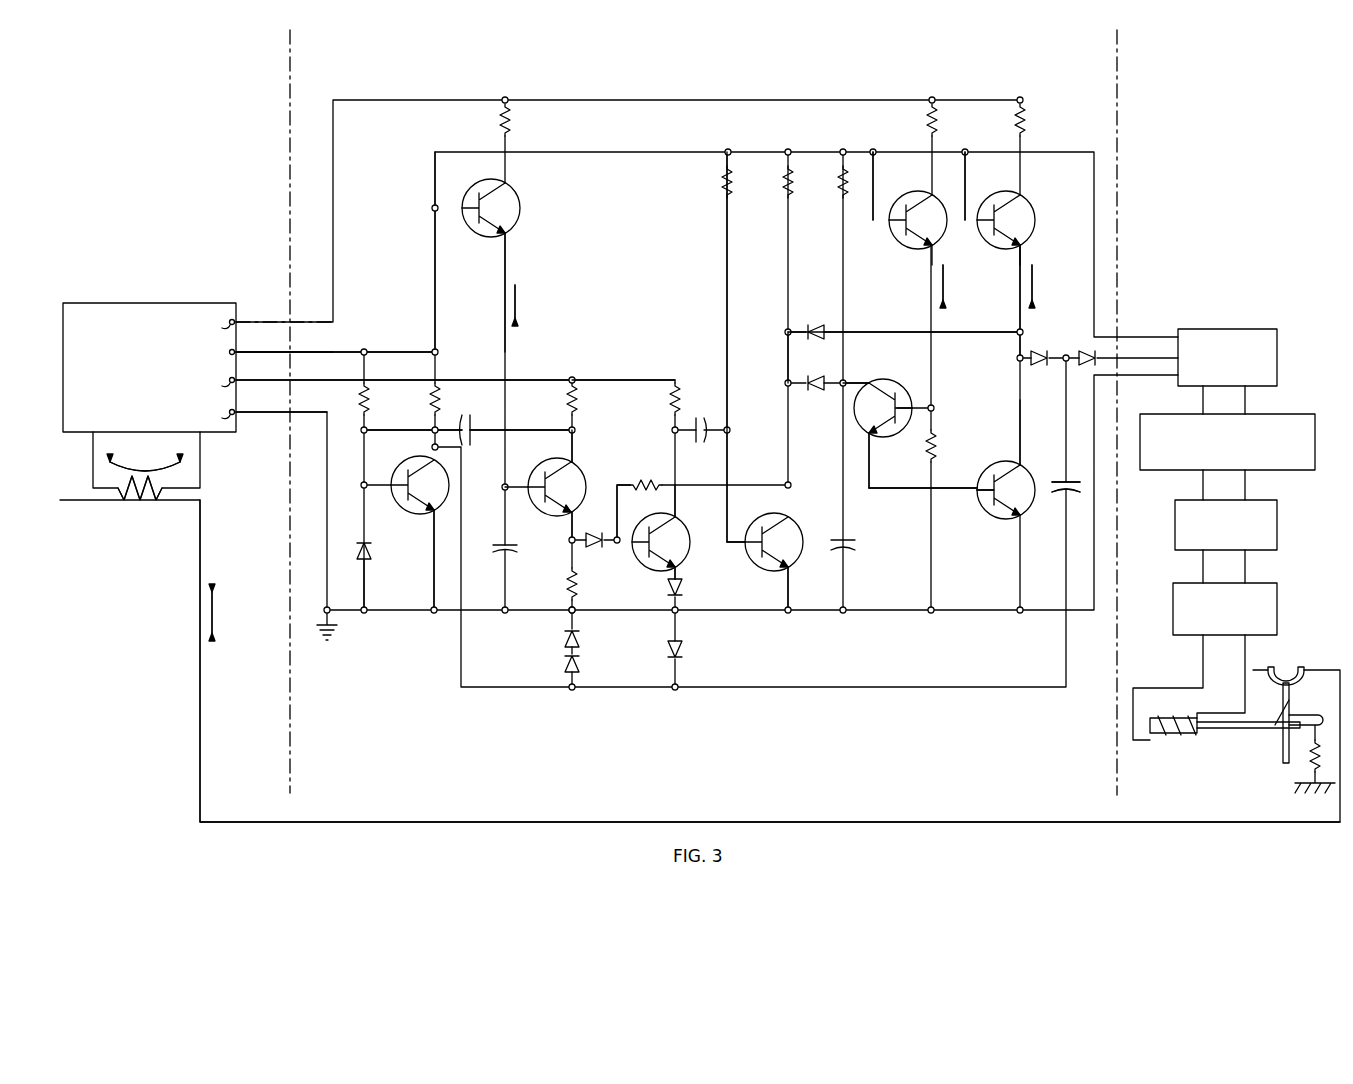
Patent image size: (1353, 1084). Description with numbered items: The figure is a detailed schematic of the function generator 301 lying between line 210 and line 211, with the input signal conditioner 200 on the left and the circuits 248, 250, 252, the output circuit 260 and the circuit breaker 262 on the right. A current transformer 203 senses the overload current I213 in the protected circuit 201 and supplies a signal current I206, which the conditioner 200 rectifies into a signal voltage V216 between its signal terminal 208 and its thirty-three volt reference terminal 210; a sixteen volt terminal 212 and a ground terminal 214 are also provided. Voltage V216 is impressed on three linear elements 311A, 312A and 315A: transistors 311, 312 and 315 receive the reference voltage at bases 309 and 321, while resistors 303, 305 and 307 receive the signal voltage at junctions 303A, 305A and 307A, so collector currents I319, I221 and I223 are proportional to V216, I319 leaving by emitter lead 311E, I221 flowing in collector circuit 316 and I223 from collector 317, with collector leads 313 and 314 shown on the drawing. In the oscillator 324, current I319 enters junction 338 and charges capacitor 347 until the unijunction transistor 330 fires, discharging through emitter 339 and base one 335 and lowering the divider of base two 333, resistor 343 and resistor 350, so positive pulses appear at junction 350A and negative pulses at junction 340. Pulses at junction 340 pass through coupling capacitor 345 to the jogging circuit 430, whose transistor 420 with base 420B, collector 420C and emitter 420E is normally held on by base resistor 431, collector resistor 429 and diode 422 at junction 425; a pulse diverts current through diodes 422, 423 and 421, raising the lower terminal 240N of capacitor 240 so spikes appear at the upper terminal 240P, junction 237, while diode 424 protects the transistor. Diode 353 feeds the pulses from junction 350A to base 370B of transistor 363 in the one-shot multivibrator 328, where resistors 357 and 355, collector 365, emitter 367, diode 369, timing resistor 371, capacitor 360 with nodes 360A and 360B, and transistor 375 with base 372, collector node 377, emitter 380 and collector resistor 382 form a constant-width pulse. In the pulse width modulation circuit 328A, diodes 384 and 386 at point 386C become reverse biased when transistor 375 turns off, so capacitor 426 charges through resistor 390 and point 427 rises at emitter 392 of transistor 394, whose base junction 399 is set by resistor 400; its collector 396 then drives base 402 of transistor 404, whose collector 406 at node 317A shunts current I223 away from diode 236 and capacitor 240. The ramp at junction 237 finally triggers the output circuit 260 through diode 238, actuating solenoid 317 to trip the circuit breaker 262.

The input signal conditioner 200 is at (134, 302).
The protected circuit 201 is at (1340, 816).
The current transformer 203 is at (128, 506).
The signal output terminal 208 is at (209, 317).
The reference voltage output terminal 210 is at (290, 790).
The boundary line 211 is at (1117, 790).
The sixteen volt output terminal 212 is at (387, 368).
The ground terminal 214 is at (264, 402).
The signal voltage V216 is at (240, 347).
The signal current I206 is at (125, 461).
The overload current I213 is at (218, 622).
The diode 236 is at (1040, 348).
The junction point 237 is at (1066, 362).
The diode 238 is at (1084, 348).
The capacitor 240 is at (1048, 476).
The upper terminal of capacitor 240P is at (1080, 483).
The lower terminal of capacitor 240N is at (1080, 497).
The short delay circuit 248 is at (1262, 327).
The instantaneous trip circuit 250 is at (1292, 412).
The ground circuit 252 is at (1268, 497).
The output circuit 260 is at (1262, 582).
The circuit breaker 262 is at (1287, 701).
The function generator 301 is at (627, 33).
The resistor 303 is at (512, 122).
The junction 303A is at (510, 100).
The resistor 305 is at (931, 128).
The junction 305A is at (930, 100).
The resistor 307 is at (1028, 130).
The junction 307A is at (1020, 100).
The base terminal 309 is at (416, 208).
The transistor 311 is at (516, 196).
The amplifier element 311A is at (442, 175).
The emitter 311E is at (531, 260).
The transistor 312 is at (890, 234).
The amplifier element 312A is at (920, 170).
The collector 313 is at (916, 198).
The collector 314 is at (1022, 198).
The transistor 315 is at (1030, 202).
The amplifier circuit 315A is at (1007, 170).
The collector circuit 316 is at (936, 236).
The collector 317 is at (1178, 734).
The node 317A is at (1016, 332).
The base terminal 321 is at (964, 152).
The oscillator 324 is at (518, 401).
The one-shot multivibrator 328 is at (736, 400).
The pulse width modulation circuit 328A is at (860, 320).
The unijunction transistor 330 is at (578, 463).
The base two 333 is at (556, 476).
The base one 335 is at (568, 530).
The junction 338 is at (502, 474).
The emitter 339 is at (540, 460).
The junction 340 is at (580, 430).
The resistor 343 is at (578, 400).
The coupling capacitor 345 is at (460, 414).
The capacitor 347 is at (492, 550).
The resistor 350 is at (578, 592).
The junction 350A is at (570, 546).
The diode 353 is at (594, 548).
The resistor 355 is at (646, 482).
The resistor 357 is at (670, 400).
The capacitor 360 is at (698, 416).
The node 360A is at (732, 430).
The junction point 360B is at (670, 434).
The transistor 363 is at (686, 525).
The collector 365 is at (680, 512).
The emitter 367 is at (666, 570).
The diode 369 is at (686, 594).
The base 370B is at (640, 524).
The resistor 371 is at (718, 184).
The base 372 is at (758, 520).
The transistor 375 is at (792, 508).
The node 377 is at (792, 484).
The emitter 380 is at (762, 590).
The collector resistor 382 is at (776, 182).
The diode 384 is at (816, 320).
The diode 386 is at (816, 374).
The point 386C is at (786, 372).
The resistor 390 is at (834, 184).
The emitter 392 is at (904, 386).
The transistor 394 is at (882, 460).
The collector 396 is at (923, 475).
The junction point 399 is at (934, 407).
The resistor 400 is at (938, 440).
The base 402 is at (982, 486).
The transistor 404 is at (1000, 526).
The collector 406 is at (1014, 462).
The transistor 420 is at (404, 478).
The base 420B is at (422, 514).
The collector 420C is at (432, 454).
The emitter 420E is at (370, 554).
The diode 421 is at (582, 662).
The diode 422 is at (380, 596).
The diode 423 is at (582, 640).
The diode 424 is at (688, 654).
The junction 425 is at (356, 480).
The capacitor 426 is at (860, 540).
The point 427 is at (848, 380).
The collector resistor 429 is at (426, 404).
The jogging circuit 430 is at (380, 586).
The base resistor 431 is at (360, 402).
The collector current I319 is at (522, 312).
The collector current I221 is at (978, 292).
The collector current I223 is at (1068, 292).